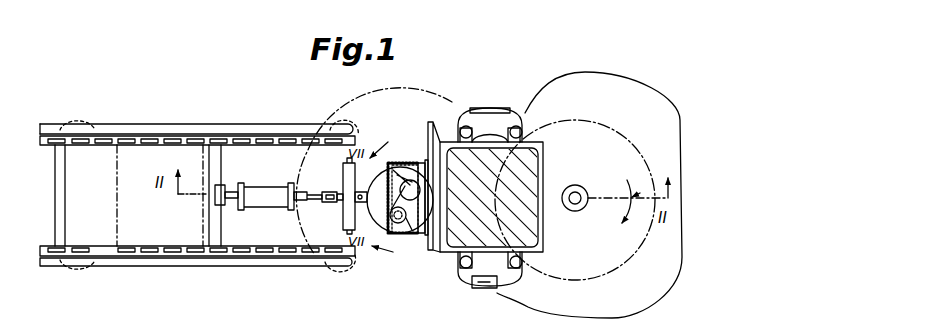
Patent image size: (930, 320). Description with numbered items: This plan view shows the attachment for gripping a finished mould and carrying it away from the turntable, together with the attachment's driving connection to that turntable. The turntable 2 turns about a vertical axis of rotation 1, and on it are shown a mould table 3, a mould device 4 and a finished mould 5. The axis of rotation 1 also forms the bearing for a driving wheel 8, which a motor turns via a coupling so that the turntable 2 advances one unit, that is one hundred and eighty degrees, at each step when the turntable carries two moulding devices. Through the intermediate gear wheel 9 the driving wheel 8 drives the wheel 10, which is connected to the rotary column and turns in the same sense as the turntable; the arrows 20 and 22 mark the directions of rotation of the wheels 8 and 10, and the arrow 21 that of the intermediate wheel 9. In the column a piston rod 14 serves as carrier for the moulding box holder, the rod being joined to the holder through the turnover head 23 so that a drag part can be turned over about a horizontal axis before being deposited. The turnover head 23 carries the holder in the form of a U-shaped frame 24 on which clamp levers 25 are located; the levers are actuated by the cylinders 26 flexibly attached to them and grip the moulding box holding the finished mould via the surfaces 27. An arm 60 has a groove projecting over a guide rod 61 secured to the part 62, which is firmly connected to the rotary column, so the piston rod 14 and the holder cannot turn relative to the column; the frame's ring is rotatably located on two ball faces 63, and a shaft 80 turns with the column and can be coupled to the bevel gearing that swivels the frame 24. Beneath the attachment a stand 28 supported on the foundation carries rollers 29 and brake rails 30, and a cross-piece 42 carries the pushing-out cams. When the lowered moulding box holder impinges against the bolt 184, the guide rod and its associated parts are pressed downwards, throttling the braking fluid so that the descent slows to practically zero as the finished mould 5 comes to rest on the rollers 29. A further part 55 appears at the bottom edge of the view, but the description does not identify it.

The vertical axis of rotation 1 is at (578, 186).
The turntable 2 is at (595, 83).
The mould table 3 is at (541, 243).
The mould device 4 is at (540, 224).
The finished mould 5 is at (535, 176).
The driving wheel 8 is at (629, 138).
The gear wheel 9 is at (488, 109).
The wheel 10 is at (398, 115).
The piston rod 14 is at (406, 262).
The arrow 20 is at (634, 189).
The arrow 21 is at (496, 126).
The arrow 22 is at (395, 255).
The turnover head 23 is at (440, 233).
The U-shaped frame 24 is at (437, 266).
The clamp levers 25 is at (519, 281).
The cylinders 26 is at (472, 288).
The surfaces 27 is at (484, 288).
The stand 28 is at (176, 268).
The rollers 29 is at (158, 244).
The brake rails 30 is at (84, 243).
The cross-piece 42 is at (341, 176).
The support 55 is at (434, 318).
The arm 60 is at (411, 166).
The guide rod 61 is at (399, 164).
The part 62 is at (393, 164).
The ball faces 63 is at (421, 198).
The shaft 80 is at (389, 230).
The bolt 184 is at (343, 215).